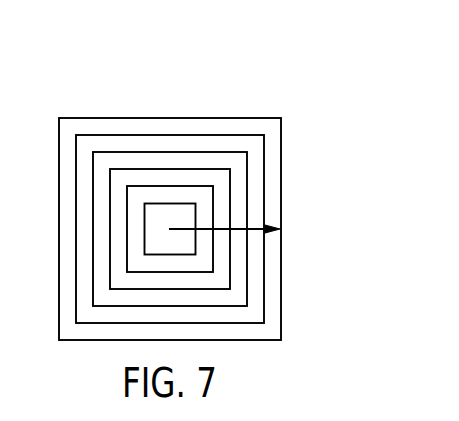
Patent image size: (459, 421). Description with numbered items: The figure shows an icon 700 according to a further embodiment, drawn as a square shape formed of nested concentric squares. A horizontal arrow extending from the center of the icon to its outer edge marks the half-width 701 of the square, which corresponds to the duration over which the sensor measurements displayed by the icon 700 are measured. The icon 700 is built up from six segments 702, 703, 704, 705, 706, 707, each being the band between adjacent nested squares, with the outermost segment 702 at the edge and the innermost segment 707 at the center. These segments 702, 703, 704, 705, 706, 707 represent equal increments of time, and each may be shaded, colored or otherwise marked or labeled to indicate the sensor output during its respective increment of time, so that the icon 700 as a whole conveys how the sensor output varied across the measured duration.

The icon 700 is at (174, 188).
The half-width 701 is at (253, 228).
The segment 702 is at (69, 290).
The segment 703 is at (88, 276).
The segment 704 is at (103, 258).
The segment 705 is at (121, 245).
The segment 706 is at (136, 225).
The segment 707 is at (150, 210).